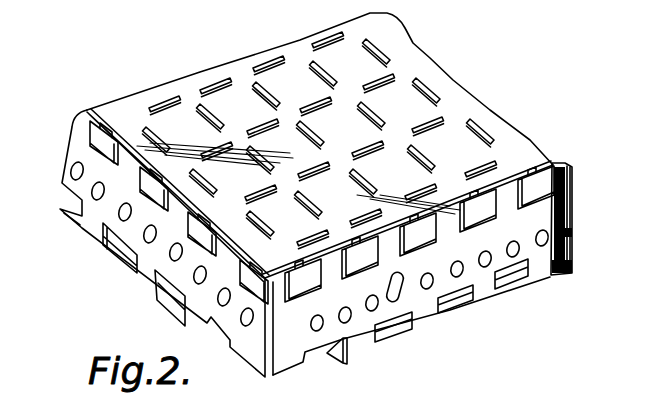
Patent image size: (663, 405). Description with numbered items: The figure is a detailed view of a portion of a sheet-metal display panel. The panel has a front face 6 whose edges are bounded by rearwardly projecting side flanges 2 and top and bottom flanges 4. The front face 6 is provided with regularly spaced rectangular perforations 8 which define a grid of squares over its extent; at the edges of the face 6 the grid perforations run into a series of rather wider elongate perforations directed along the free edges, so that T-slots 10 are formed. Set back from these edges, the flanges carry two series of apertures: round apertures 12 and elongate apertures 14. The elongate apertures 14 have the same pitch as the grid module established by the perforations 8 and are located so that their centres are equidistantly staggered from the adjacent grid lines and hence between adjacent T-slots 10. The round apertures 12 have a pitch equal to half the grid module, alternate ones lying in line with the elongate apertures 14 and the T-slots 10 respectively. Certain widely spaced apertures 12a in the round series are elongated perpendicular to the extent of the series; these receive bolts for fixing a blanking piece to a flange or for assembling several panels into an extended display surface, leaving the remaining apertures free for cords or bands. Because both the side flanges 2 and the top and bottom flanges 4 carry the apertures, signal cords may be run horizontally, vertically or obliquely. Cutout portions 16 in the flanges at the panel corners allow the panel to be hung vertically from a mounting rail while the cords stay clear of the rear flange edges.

The side flanges 2 is at (93, 235).
The top and bottom flanges 4 is at (543, 208).
The front face 6 is at (452, 88).
The rectangular perforations 8 is at (323, 76).
The T-slots 10 is at (100, 137).
The round apertures 12 is at (72, 170).
The elongated apertures 12a is at (395, 305).
The elongate apertures 14 is at (127, 258).
The cutout portions 16 is at (320, 355).